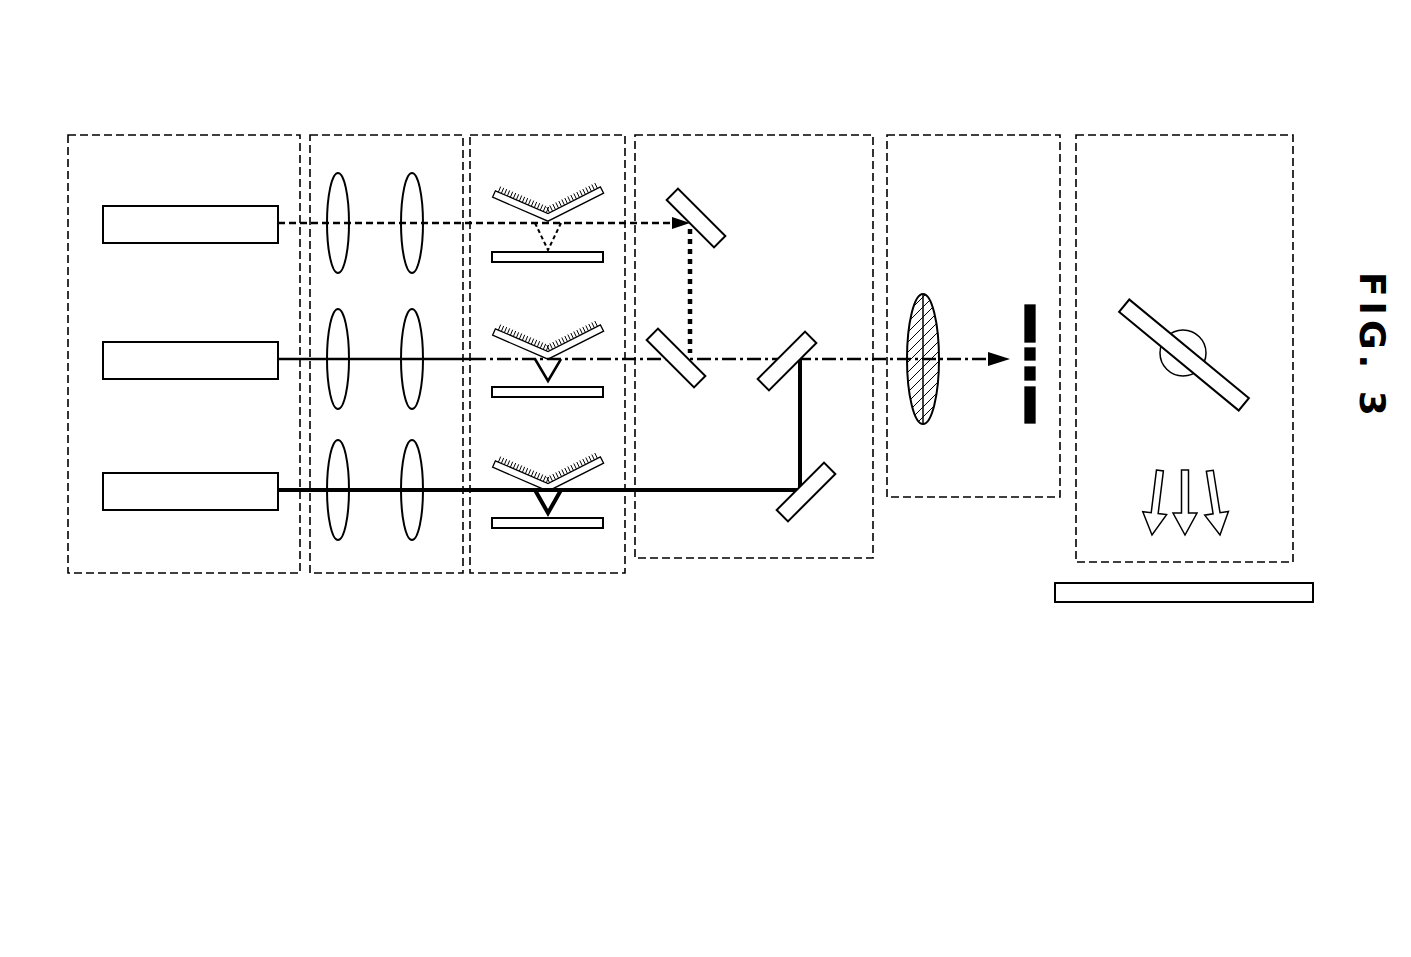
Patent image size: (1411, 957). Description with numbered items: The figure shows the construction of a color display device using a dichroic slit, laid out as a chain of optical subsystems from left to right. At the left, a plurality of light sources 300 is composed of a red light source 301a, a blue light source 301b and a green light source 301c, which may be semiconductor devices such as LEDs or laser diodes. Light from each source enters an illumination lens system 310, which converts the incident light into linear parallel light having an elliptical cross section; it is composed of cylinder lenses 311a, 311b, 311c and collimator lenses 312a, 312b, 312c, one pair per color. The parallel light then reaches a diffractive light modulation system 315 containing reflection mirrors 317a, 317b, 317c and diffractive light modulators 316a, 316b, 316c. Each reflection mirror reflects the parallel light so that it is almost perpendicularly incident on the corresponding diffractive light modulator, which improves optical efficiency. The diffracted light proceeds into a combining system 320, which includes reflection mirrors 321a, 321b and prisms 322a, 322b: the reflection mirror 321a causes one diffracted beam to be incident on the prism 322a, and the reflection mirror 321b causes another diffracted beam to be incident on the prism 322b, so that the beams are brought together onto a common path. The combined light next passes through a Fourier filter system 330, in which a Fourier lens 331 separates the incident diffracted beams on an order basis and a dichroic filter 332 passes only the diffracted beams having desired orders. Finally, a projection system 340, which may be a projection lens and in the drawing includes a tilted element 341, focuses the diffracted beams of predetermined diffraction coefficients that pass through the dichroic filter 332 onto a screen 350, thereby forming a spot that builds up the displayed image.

The plurality of light sources 300 is at (172, 133).
The red light source 301a is at (222, 205).
The blue light source 301b is at (222, 341).
The green light source 301c is at (222, 472).
The illumination lens system 310 is at (395, 133).
The cylinder lens 311a is at (346, 188).
The collimator lens 312a is at (420, 188).
The cylinder lens 311b is at (346, 323).
The collimator lens 312b is at (420, 323).
The cylinder lens 311c is at (346, 453).
The collimator lens 312c is at (420, 453).
The diffractive light modulation system 315 is at (551, 133).
The diffractive light modulator 316a is at (521, 263).
The diffractive light modulator 316b is at (521, 398).
The diffractive light modulator 316c is at (521, 529).
The reflection mirror 317a is at (603, 189).
The reflection mirror 317b is at (603, 325).
The reflection mirror 317c is at (603, 456).
The combining system 320 is at (760, 133).
The reflection mirror 321a is at (702, 210).
The reflection mirror 321b is at (816, 507).
The prism 322a is at (684, 378).
The prism 322b is at (782, 345).
The Fourier filter system 330 is at (997, 133).
The Fourier lens 331 is at (930, 300).
The dichroic filter 332 is at (1028, 425).
The projection system 340 is at (1208, 133).
The scanning mirror 341 is at (1145, 310).
The screen 350 is at (1222, 603).